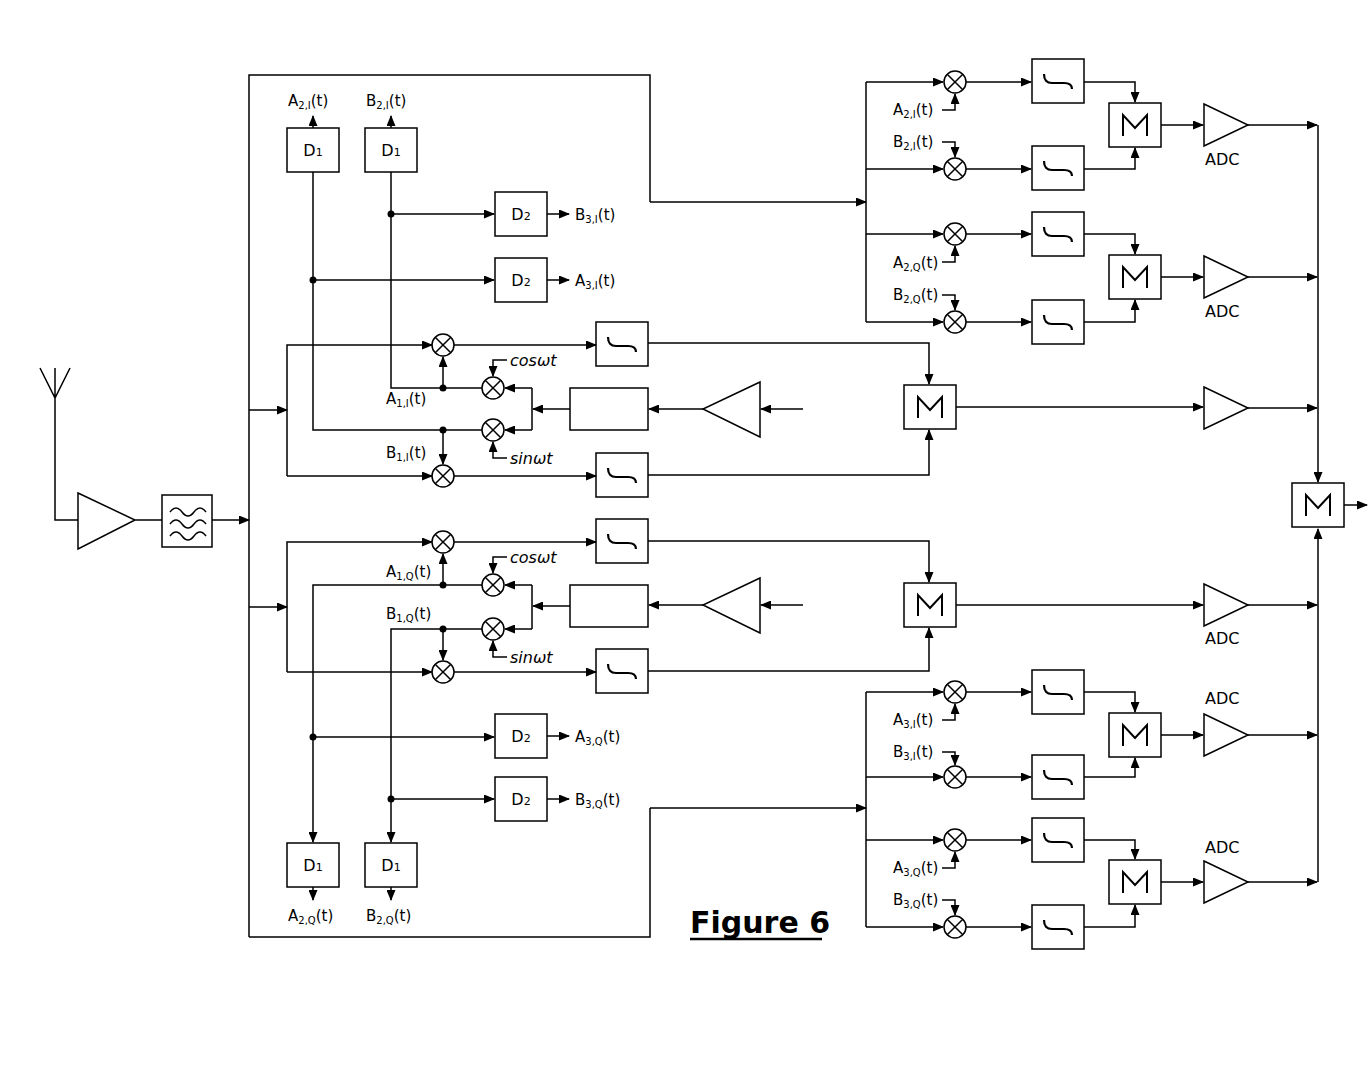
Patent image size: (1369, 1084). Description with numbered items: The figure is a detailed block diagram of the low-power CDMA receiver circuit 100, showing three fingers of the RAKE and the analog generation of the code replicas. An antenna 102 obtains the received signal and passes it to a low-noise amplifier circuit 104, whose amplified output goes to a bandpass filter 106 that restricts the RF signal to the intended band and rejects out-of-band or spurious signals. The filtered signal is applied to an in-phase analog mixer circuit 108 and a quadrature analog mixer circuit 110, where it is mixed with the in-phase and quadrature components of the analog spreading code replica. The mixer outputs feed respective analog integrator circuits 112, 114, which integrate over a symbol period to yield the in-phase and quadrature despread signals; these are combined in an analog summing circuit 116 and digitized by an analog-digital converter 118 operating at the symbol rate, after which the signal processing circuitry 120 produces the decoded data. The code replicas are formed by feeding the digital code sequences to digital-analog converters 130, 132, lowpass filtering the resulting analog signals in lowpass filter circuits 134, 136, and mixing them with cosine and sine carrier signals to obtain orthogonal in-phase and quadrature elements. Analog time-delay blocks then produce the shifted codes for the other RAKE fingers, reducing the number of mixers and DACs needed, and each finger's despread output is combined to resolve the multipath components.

The receiver circuit 100 is at (148, 178).
The antenna 102 is at (57, 417).
The low-noise amplifier circuit 104 is at (100, 541).
The bandpass filter 106 is at (187, 547).
The in-phase analog mixer circuit 108 is at (444, 334).
The quadrature analog mixer circuit 110 is at (443, 488).
The analog integrator circuit 112 is at (649, 324).
The analog integrator circuit 114 is at (649, 484).
The analog summing circuit 116 is at (957, 430).
The analog-digital converter 118 is at (1215, 390).
The signal processing circuitry 120 is at (1292, 504).
The digital-analog converter 130 is at (748, 382).
The digital-analog converter 132 is at (762, 580).
The lowpass filter circuit 134 is at (649, 390).
The lowpass filter circuit 136 is at (649, 588).